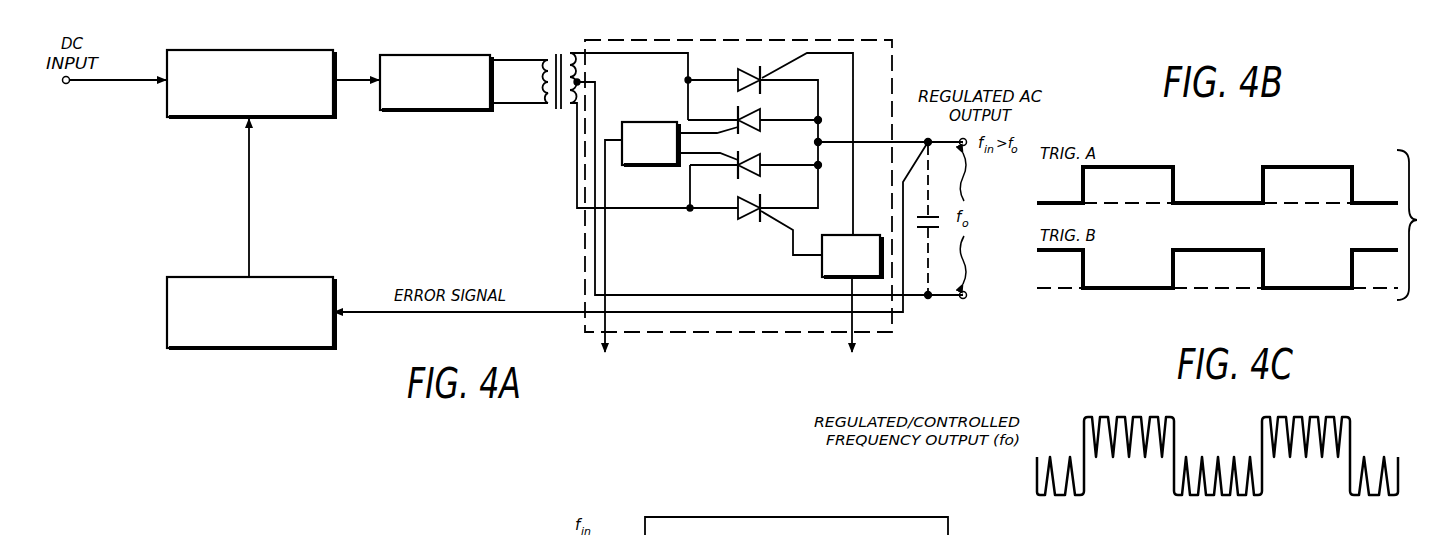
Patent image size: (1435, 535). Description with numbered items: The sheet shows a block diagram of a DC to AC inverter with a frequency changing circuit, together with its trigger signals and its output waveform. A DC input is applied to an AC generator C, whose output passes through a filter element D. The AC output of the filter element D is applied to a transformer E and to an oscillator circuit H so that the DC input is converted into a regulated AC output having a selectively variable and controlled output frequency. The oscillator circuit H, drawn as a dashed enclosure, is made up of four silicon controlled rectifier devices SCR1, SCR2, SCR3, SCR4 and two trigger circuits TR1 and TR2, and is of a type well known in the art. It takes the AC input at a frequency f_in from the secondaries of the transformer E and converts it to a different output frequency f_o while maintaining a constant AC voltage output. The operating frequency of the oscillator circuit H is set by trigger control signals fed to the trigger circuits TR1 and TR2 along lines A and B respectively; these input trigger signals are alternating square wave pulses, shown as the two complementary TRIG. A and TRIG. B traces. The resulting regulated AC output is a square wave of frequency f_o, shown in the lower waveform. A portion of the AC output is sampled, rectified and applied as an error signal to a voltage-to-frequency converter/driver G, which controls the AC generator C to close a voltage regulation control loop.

The AC generator C is at (254, 53).
The filter element D is at (449, 53).
The transformer E is at (556, 53).
The voltage-to-frequency converter/driver G is at (312, 269).
The oscillator circuit H is at (894, 57).
The silicon controlled rectifier device SCR1 is at (757, 65).
The silicon controlled rectifier device SCR2 is at (753, 111).
The silicon controlled rectifier device SCR3 is at (753, 158).
The silicon controlled rectifier device SCR4 is at (747, 222).
The trigger circuit TR1 is at (628, 251).
The trigger circuit TR2 is at (852, 308).